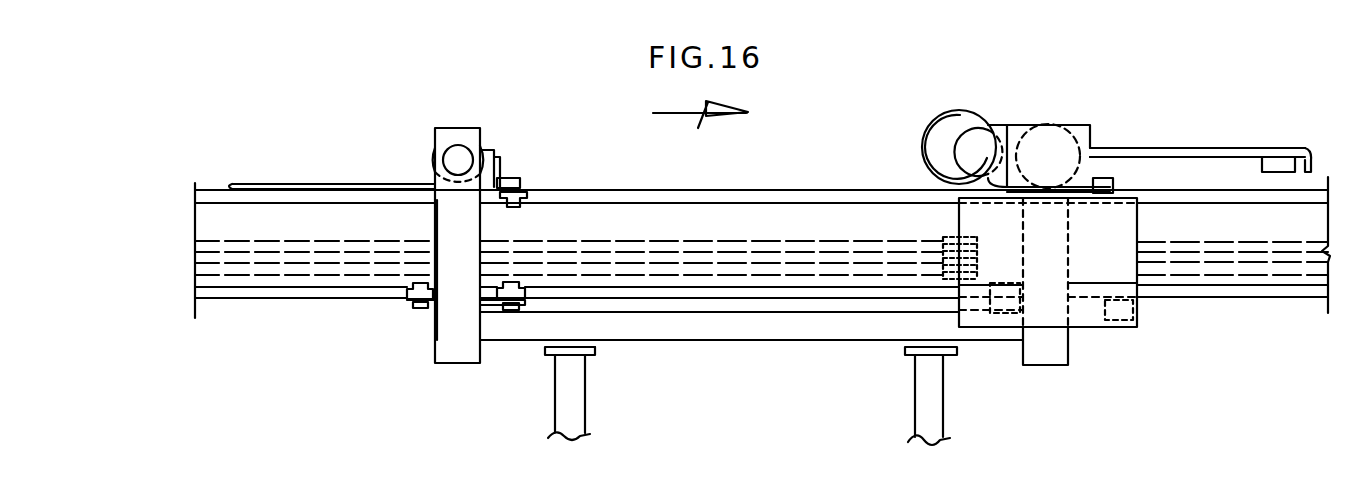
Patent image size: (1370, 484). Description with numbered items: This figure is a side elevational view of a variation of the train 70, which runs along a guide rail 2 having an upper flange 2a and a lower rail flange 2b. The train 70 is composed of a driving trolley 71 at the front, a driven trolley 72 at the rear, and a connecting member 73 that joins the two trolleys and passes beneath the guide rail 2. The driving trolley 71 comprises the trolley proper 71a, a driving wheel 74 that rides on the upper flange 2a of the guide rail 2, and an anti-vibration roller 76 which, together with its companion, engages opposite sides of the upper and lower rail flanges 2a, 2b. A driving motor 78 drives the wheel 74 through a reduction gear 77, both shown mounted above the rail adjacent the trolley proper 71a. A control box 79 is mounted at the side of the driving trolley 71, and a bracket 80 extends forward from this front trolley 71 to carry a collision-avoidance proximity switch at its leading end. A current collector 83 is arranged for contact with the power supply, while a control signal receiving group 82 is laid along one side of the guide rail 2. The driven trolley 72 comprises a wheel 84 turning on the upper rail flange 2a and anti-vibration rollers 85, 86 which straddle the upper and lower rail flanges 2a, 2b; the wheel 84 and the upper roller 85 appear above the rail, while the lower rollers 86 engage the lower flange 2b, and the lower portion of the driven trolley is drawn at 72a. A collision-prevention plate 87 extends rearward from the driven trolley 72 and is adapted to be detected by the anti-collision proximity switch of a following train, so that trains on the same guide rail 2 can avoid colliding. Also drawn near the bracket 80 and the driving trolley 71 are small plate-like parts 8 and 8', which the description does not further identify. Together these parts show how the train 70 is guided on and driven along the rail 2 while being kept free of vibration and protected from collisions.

The guide rail 2 is at (813, 188).
The upper flange 2a is at (652, 208).
The lower rail flange 2b is at (718, 290).
The plate 8 is at (1131, 172).
The plate 8' is at (1297, 117).
The train 70 is at (540, 388).
The driving trolley 71 is at (1067, 112).
The trolley proper 71a is at (1055, 345).
The driven trolley 72 is at (455, 120).
The post lower portion 72a is at (451, 327).
The connecting member 73 is at (813, 330).
The driving wheel 74 is at (1038, 150).
The anti-vibration roller 76 is at (1110, 315).
The reduction gear 77 is at (983, 132).
The driving motor 78 is at (950, 116).
The control box 79 is at (1123, 262).
The bracket 80 is at (1230, 148).
The control signal receiving group 82 is at (770, 250).
The current collector 83 is at (944, 236).
The wheel 84 is at (430, 152).
The anti-vibration roller 85 is at (515, 186).
The anti-vibration roller 86 is at (407, 297).
The collision-prevention plate 87 is at (268, 183).